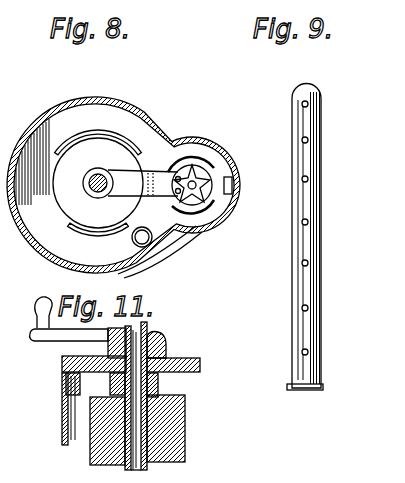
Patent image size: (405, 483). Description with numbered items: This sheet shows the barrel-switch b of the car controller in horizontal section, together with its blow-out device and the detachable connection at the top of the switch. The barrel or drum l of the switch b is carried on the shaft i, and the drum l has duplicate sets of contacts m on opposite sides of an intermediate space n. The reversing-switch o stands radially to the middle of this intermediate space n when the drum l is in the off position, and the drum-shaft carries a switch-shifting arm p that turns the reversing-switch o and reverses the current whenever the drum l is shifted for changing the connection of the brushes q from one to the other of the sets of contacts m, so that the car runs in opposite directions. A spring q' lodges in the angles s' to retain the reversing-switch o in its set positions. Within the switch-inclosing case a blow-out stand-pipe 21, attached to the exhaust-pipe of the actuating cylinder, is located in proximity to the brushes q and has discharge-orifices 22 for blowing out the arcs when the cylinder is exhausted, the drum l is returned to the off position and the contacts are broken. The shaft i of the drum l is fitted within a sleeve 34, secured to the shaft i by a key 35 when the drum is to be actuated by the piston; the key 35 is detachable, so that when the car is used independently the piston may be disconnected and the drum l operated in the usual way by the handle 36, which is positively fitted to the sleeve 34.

In FIG. 8, the barrel-switch b is at (123, 181).
In FIG. 11, the barrel-switch b is at (192, 366).
In FIG. 8, the barrel or drum l is at (52, 168).
In FIG. 11, the barrel or drum l is at (143, 430).
In FIG. 8, the shaft i is at (85, 185).
In FIG. 11, the shaft i is at (142, 464).
In FIG. 8, the sets of contacts m is at (90, 126).
In FIG. 8, the switch-shifting arm p is at (112, 196).
In FIG. 11, the switch-shifting arm p is at (160, 387).
In FIG. 8, the reversing-switch o is at (212, 172).
In FIG. 8, the intermediate space n is at (193, 180).
In FIG. 8, the angles s' is at (194, 195).
In FIG. 8, the spring q' is at (242, 175).
In FIG. 8, the brushes q is at (160, 254).
In FIG. 8, the blow-out stand-pipe 21 is at (146, 248).
In FIG. 9, the blow-out stand-pipe 21 is at (322, 170).
In FIG. 9, the discharge-orifices 22 is at (300, 263).
In FIG. 11, the handle 36 is at (62, 342).
In FIG. 11, the key 35 is at (147, 330).
In FIG. 11, the sleeve 34 is at (93, 409).